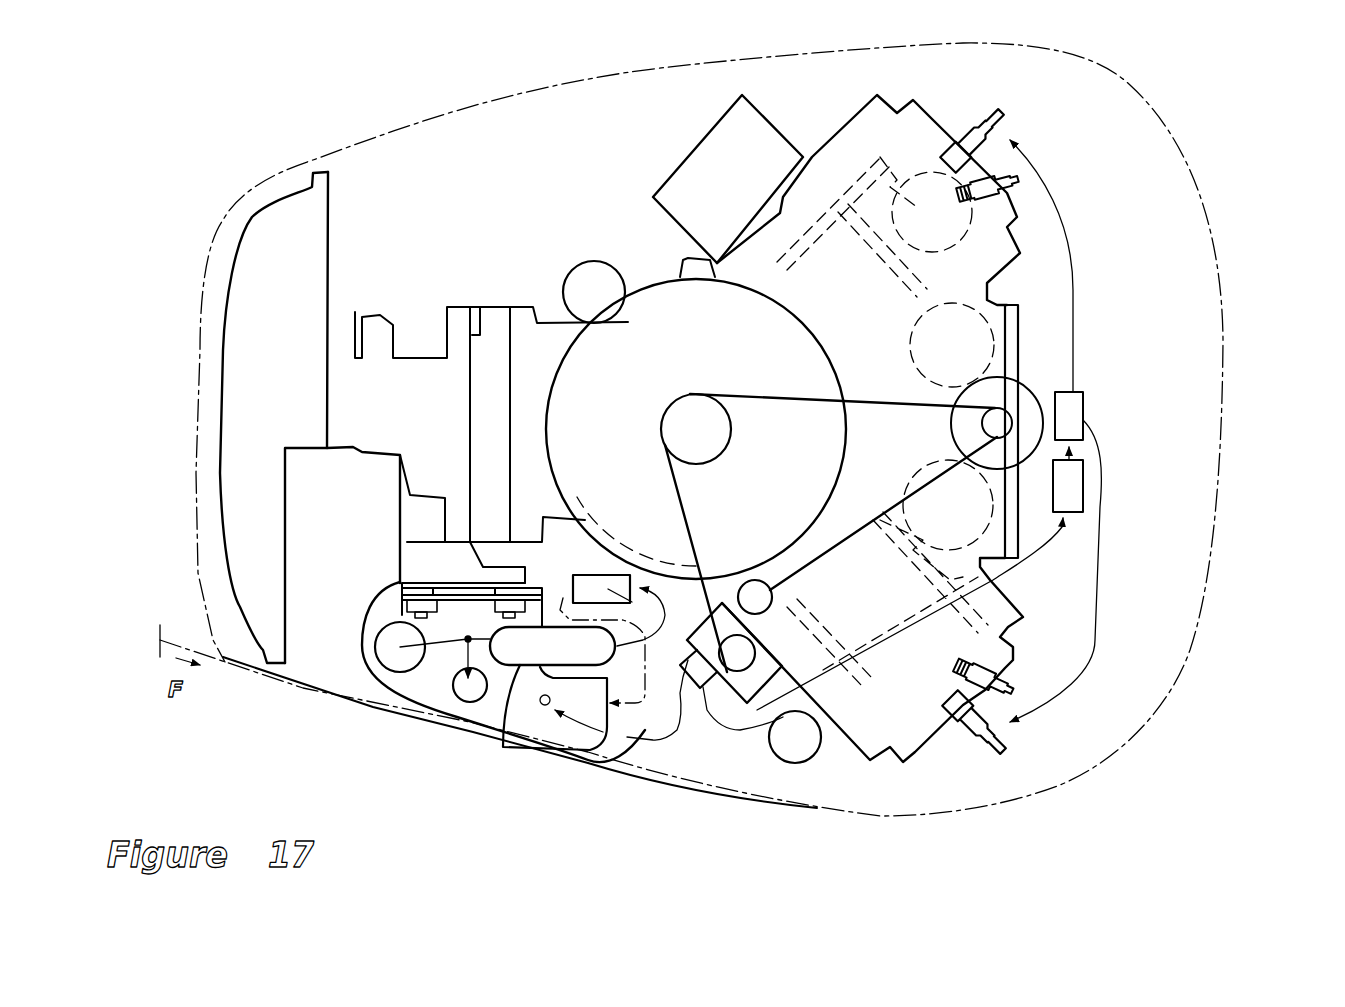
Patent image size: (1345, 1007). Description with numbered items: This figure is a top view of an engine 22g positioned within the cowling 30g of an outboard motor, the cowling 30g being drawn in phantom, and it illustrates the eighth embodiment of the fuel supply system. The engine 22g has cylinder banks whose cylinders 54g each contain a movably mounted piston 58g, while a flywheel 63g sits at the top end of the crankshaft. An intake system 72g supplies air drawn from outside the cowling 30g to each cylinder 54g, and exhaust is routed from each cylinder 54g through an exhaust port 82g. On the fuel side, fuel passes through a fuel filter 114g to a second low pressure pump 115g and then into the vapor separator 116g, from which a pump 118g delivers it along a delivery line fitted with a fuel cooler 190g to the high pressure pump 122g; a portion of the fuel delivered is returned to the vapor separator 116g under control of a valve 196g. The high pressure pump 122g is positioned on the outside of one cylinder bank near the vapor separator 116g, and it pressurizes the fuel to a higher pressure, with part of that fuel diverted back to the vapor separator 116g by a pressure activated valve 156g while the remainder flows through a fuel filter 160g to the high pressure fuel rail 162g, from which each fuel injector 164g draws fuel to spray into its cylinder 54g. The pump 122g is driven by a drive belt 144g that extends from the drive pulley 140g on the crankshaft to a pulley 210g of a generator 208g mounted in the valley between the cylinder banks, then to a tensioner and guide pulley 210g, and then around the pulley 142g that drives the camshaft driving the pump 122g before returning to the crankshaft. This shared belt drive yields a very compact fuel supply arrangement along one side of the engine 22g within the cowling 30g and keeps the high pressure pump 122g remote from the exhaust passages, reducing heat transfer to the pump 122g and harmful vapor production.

The engine 22g is at (1202, 281).
The cowling 30g is at (1208, 605).
The cylinder 54g is at (930, 117).
The piston 58g is at (960, 193).
The flywheel 63g is at (603, 307).
The intake system 72g is at (377, 437).
The exhaust port 82g is at (973, 342).
The fuel filter 114g is at (790, 740).
The second low pressure pump 115g is at (692, 622).
The vapor separator 116g is at (530, 723).
The pump 118g is at (388, 658).
The high pressure pump 122g is at (743, 703).
The drive pulley 140g is at (677, 440).
The pulley 142g is at (757, 640).
The drive belt 144g is at (772, 397).
The pressure activated valve 156g is at (687, 693).
The fuel filter 160g is at (1083, 490).
The high pressure fuel rail 162g is at (1083, 407).
The fuel injector 164g is at (1007, 127).
The fuel cooler 190g is at (522, 663).
The valve 196g is at (470, 693).
The generator 208g is at (1023, 385).
The pulley 210g is at (982, 426).